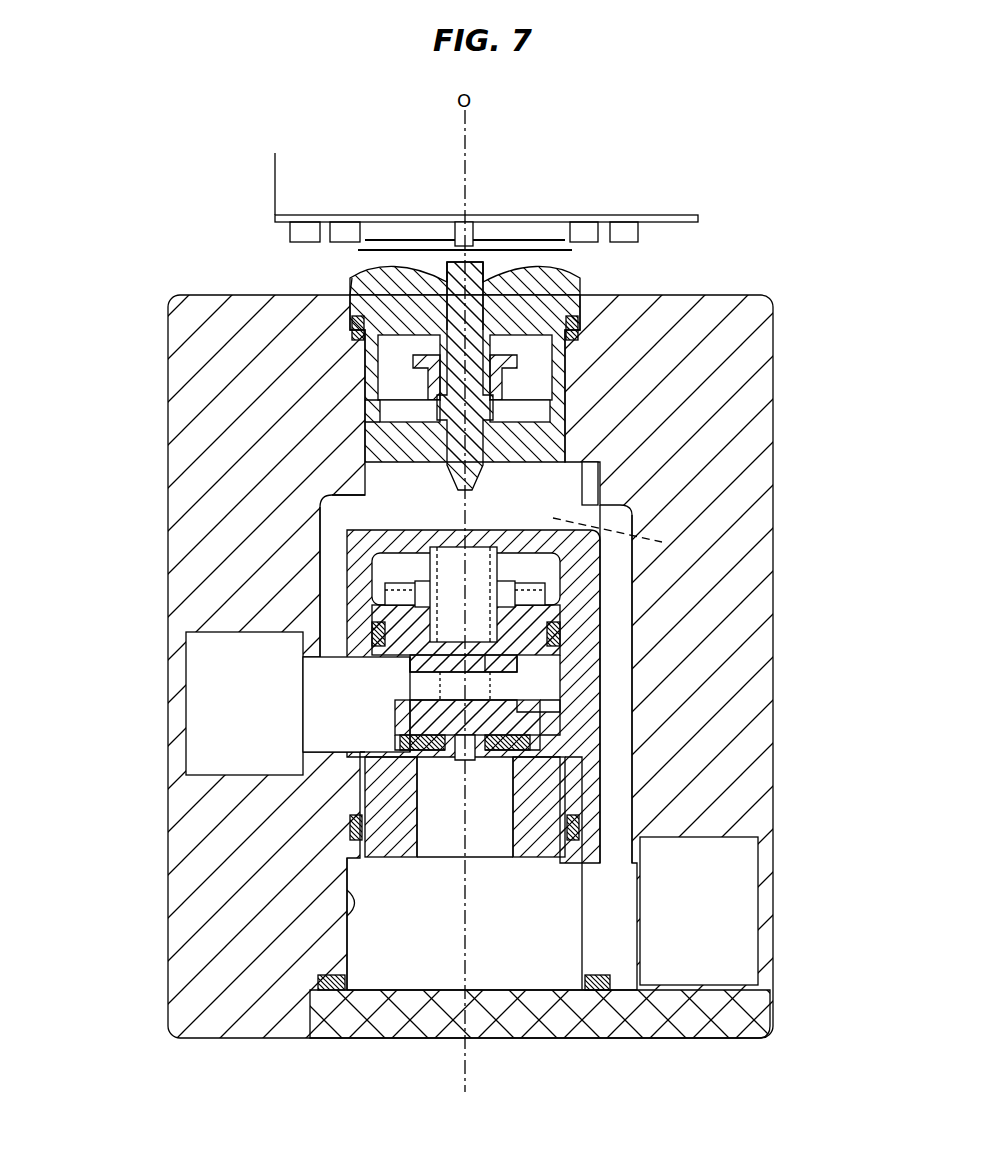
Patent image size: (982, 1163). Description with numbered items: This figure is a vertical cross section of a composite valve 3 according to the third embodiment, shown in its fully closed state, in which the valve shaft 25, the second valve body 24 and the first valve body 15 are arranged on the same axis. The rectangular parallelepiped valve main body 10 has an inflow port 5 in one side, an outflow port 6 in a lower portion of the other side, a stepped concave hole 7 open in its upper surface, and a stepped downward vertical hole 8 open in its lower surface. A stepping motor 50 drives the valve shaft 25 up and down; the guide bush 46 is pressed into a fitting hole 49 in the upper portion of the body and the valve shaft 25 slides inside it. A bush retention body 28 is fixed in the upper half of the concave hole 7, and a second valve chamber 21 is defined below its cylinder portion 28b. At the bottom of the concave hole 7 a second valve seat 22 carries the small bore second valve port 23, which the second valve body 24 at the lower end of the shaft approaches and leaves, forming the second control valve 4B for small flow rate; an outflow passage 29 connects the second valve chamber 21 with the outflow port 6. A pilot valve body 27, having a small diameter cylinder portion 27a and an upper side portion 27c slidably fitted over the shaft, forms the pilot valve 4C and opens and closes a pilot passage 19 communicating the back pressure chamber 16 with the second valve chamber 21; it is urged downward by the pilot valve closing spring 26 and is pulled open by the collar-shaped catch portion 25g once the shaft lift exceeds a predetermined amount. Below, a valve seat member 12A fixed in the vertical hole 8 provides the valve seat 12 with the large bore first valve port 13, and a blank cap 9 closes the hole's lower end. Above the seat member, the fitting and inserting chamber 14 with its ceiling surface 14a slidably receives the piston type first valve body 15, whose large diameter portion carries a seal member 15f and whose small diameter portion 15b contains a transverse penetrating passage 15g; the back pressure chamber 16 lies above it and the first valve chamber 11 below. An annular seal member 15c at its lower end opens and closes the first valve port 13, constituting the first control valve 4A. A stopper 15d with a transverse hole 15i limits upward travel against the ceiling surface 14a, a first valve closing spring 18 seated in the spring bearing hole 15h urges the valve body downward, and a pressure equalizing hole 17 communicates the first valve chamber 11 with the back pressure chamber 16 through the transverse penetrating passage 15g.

The composite valve 3 is at (282, 168).
The stepping motor 50 is at (274, 208).
The guide bush 46 is at (358, 268).
The fitting hole 49 is at (356, 291).
The valve shaft 25 is at (548, 283).
The upper side portion of pilot valve body 27c is at (478, 283).
The bush retention body 28 is at (577, 300).
The stepped concave hole 7 is at (348, 322).
The valve main body 10 is at (170, 362).
The pilot valve closing spring 26 is at (380, 336).
The pilot valve 4C is at (522, 362).
The second valve chamber 21 is at (398, 373).
The cylinder portion 28b is at (566, 373).
The catch portion 25g is at (372, 402).
The small diameter cylinder portion 27a is at (566, 397).
The second control valve 4B is at (496, 445).
The pilot valve body 27 is at (565, 447).
The ceiling surface 14a is at (344, 494).
The back pressure chamber 16 is at (462, 570).
The second valve seat 22 is at (579, 483).
The second valve body 24 is at (508, 468).
The second valve port 23 is at (325, 525).
The transverse hole 15i is at (397, 585).
The first valve closing spring 18 is at (497, 557).
The pilot passage 19 is at (620, 535).
The fitting and inserting chamber 14 is at (347, 575).
The first valve body 15 is at (378, 597).
The stopper 15d is at (545, 590).
The outflow passage 29 is at (618, 623).
The seal member 15f is at (375, 637).
The first valve chamber 11 is at (398, 678).
The pressure equalizing hole 17 is at (463, 658).
The spring bearing hole 15h is at (490, 652).
The first control valve 4A is at (396, 713).
The transverse penetrating passage 15g is at (493, 690).
The small diameter portion 15b is at (537, 707).
The seal member 15c is at (408, 740).
The valve seat 12 is at (417, 760).
The inflow port 5 is at (260, 775).
The first valve port 13 is at (423, 782).
The valve seat member 12A is at (533, 837).
The downward vertical hole 8 is at (345, 908).
The blank cap 9 is at (392, 1026).
The outflow port 6 is at (712, 984).